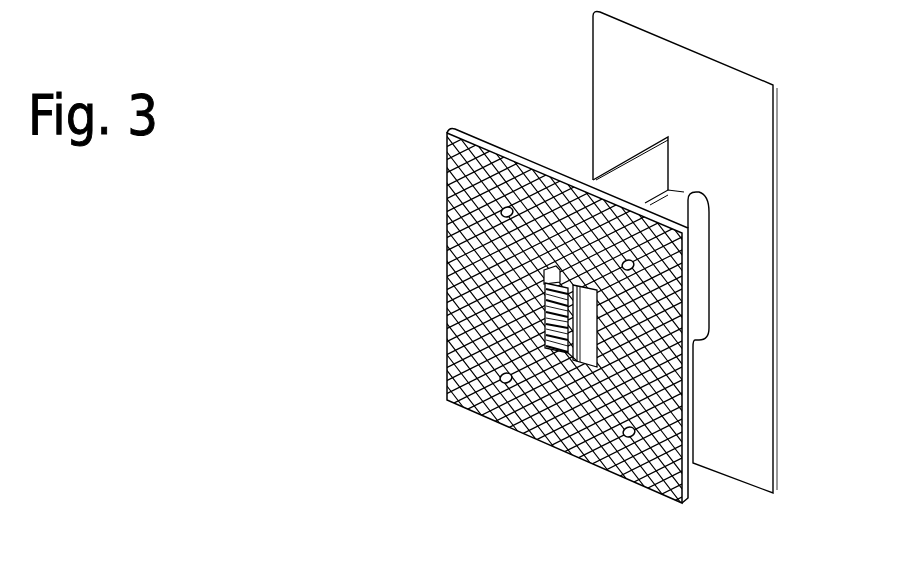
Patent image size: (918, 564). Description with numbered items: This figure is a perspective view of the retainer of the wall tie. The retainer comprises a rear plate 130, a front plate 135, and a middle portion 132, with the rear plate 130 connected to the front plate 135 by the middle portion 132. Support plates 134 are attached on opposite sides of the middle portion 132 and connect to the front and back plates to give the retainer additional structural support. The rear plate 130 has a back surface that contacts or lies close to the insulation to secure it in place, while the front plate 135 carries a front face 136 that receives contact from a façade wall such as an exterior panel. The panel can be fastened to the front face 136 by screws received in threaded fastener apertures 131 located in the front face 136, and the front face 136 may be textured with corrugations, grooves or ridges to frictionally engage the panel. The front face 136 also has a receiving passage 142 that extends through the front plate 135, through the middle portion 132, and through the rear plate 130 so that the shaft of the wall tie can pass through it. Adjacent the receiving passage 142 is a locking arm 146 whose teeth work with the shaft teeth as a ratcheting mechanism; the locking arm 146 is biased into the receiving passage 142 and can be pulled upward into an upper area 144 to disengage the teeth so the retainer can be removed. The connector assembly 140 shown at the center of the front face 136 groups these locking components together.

The rear plate 130 is at (758, 182).
The threaded fastener apertures 131 is at (506, 378).
The middle portion 132 is at (708, 277).
The support plates 134 is at (636, 170).
The front plate 135 is at (470, 133).
The front face 136 is at (470, 164).
The connector assembly 140 is at (521, 398).
The receiving passage 142 is at (557, 362).
The upper area 144 is at (588, 362).
The locking arm 146 is at (577, 358).